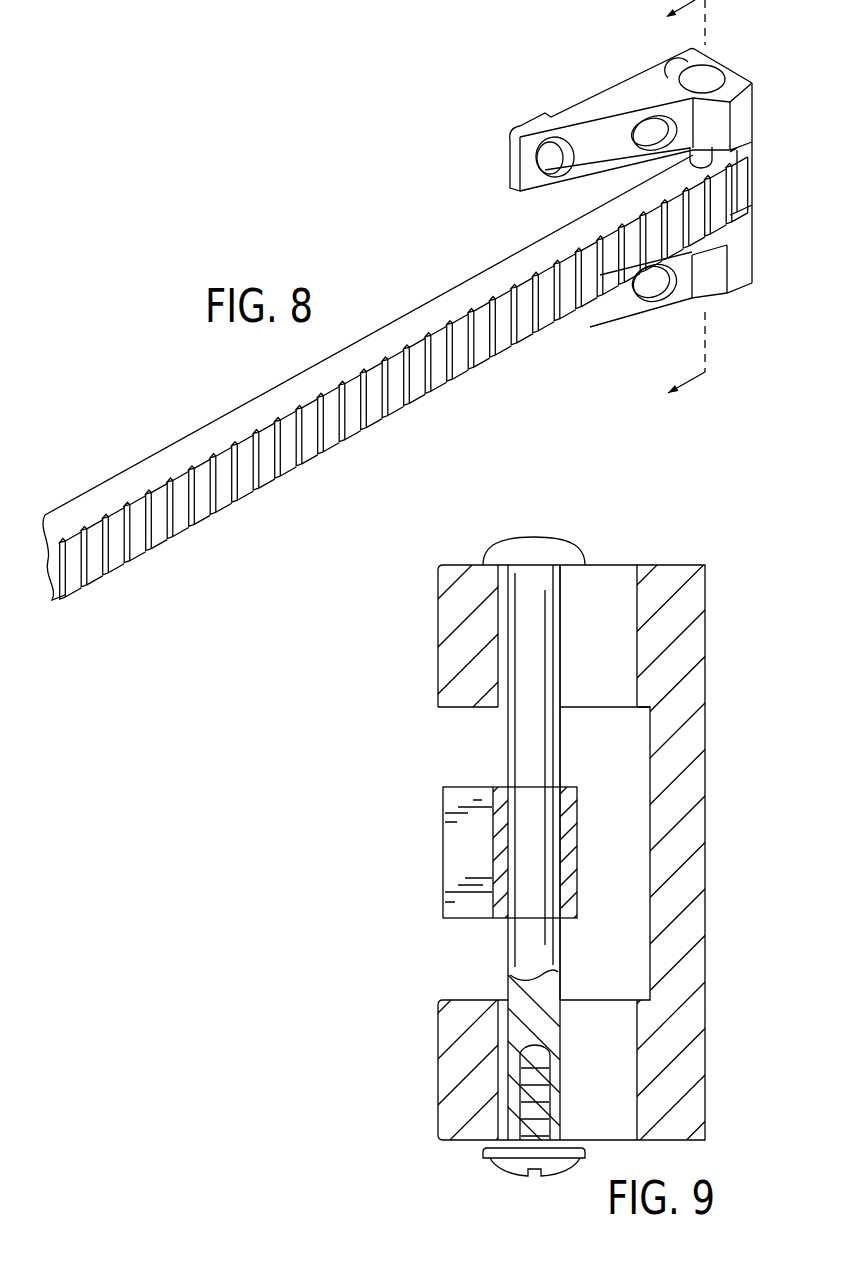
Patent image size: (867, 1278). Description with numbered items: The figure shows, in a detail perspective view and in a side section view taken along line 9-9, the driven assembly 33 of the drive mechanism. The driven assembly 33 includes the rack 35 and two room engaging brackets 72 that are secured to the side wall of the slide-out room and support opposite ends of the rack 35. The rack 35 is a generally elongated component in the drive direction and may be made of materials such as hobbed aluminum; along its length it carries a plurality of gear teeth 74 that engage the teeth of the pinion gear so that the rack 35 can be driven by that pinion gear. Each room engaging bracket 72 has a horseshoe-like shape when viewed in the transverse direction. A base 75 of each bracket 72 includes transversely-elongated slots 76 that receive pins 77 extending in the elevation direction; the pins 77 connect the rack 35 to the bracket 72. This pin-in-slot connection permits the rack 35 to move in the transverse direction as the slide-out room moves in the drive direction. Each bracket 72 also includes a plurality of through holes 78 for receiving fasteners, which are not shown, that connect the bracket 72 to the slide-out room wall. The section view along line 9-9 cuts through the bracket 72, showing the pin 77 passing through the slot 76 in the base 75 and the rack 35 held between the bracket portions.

In FIG. 8, the section line 9- 9 is at (675, 208).
In FIG. 8, the driven assembly 33 is at (358, 274).
In FIG. 9, the driven assembly 33 is at (408, 742).
In FIG. 8, the rack 35 is at (260, 394).
In FIG. 9, the rack 35 is at (443, 858).
In FIG. 8, the room engaging bracket 72 is at (586, 102).
In FIG. 9, the room engaging bracket 72 is at (706, 584).
In FIG. 8, the gear teeth 74 is at (405, 372).
In FIG. 8, the base 75 is at (755, 76).
In FIG. 9, the base 75 is at (706, 725).
In FIG. 8, the transversely-elongated slot 76 is at (674, 60).
In FIG. 9, the transversely-elongated slot 76 is at (633, 598).
In FIG. 8, the pin 77 is at (720, 73).
In FIG. 9, the pin 77 is at (560, 740).
In FIG. 8, the through hole 78 is at (550, 160).